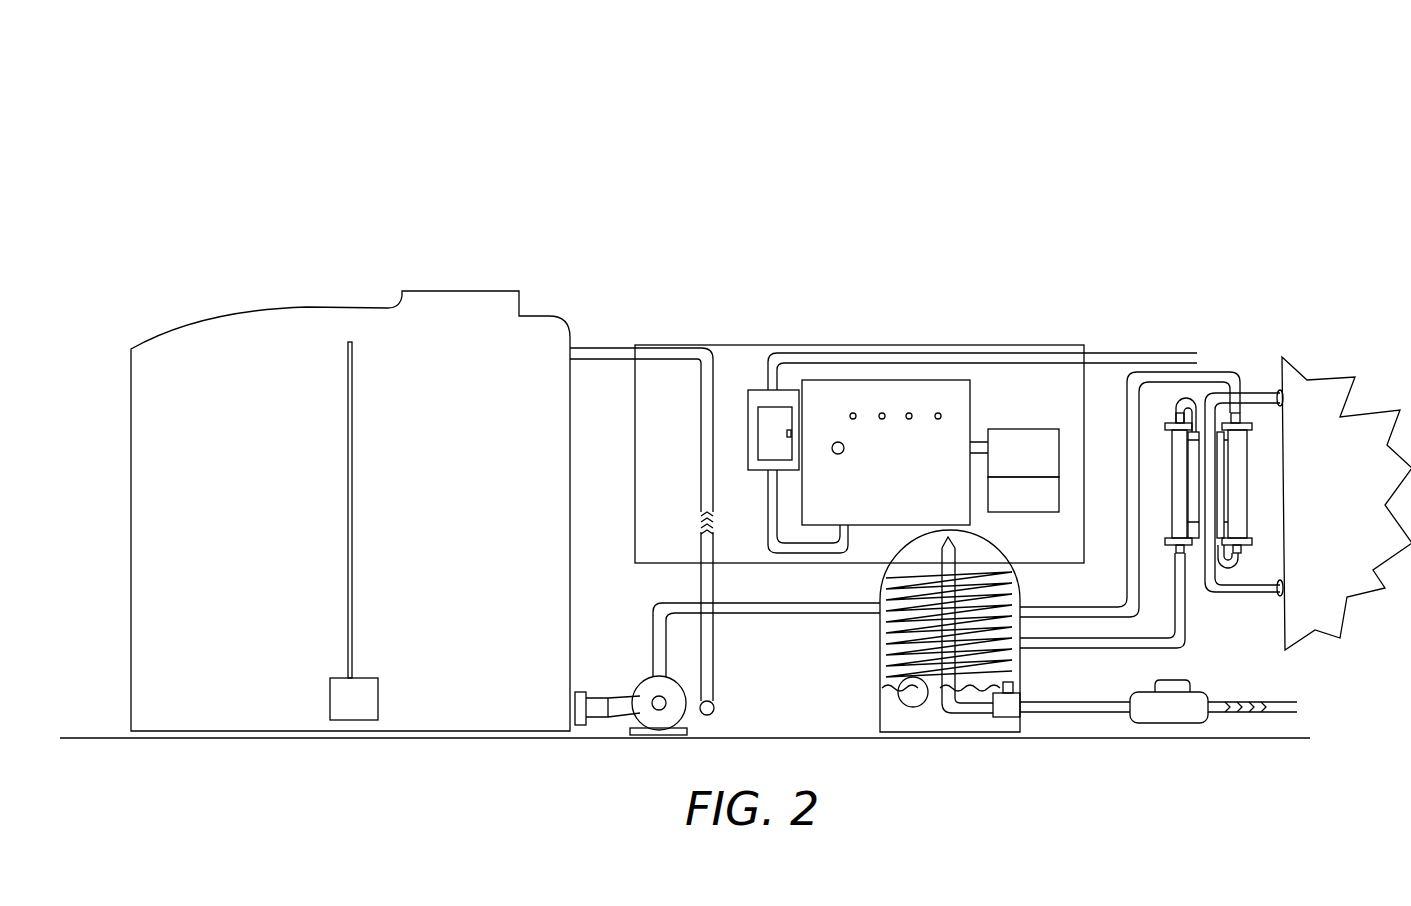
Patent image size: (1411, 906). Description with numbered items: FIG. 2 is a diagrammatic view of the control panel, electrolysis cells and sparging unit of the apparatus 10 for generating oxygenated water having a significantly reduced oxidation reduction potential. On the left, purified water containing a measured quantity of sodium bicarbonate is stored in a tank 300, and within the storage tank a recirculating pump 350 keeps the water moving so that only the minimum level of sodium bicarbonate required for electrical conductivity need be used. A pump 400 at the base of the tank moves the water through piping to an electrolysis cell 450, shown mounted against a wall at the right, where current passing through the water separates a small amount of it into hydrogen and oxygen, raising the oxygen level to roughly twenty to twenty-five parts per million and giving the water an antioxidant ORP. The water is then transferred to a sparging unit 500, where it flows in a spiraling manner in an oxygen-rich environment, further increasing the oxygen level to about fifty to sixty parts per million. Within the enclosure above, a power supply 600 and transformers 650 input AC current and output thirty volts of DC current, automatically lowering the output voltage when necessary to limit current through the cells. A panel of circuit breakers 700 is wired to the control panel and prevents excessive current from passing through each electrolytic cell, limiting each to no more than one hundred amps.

The apparatus 10 is at (835, 244).
The tank 300 is at (405, 478).
The recirculating pump 350 is at (362, 670).
The pump 400 is at (645, 687).
The sparging unit 500 is at (920, 393).
The power supply 600 is at (1033, 494).
The transformers 650 is at (1010, 447).
The panel of circuit breakers 700 is at (744, 432).
The electrolysis cell 450 is at (1247, 502).